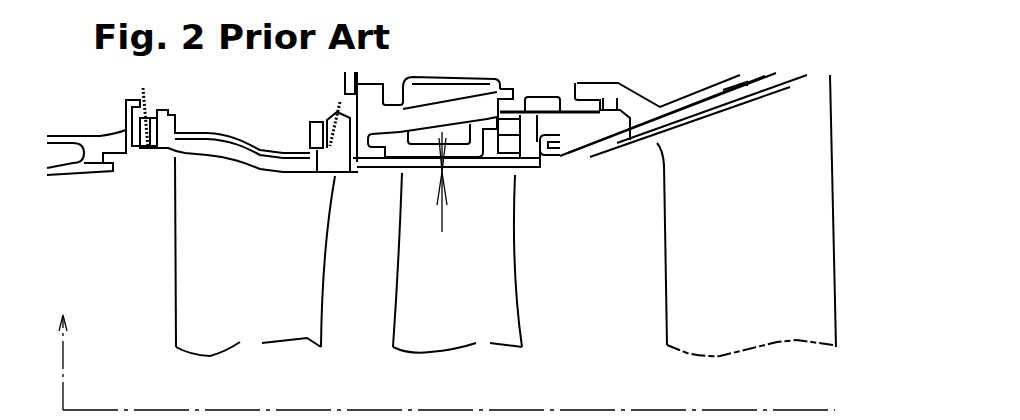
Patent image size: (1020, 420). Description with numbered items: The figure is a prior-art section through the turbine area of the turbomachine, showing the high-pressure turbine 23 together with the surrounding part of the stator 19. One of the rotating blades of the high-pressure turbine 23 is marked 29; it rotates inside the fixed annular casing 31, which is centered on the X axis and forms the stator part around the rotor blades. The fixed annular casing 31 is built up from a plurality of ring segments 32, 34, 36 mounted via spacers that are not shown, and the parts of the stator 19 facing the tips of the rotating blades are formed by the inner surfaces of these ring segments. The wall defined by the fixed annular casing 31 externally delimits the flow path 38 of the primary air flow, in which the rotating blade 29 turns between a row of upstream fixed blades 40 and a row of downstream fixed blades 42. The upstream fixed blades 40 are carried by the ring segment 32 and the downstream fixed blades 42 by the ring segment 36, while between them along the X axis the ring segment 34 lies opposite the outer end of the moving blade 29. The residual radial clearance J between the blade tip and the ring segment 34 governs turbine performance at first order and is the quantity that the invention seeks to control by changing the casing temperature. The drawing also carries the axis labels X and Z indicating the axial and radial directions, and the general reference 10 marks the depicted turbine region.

The turbine 10 is at (479, 236).
The stator 19 is at (246, 351).
The high-pressure turbine 23 is at (484, 368).
The rotating blade 29 is at (458, 279).
The fixed annular casing 31 is at (414, 187).
The ring segment 32 is at (243, 147).
The ring segment 34 is at (493, 168).
The ring segment 36 is at (780, 85).
The flow path 38 is at (479, 234).
The upstream fixed blades 40 is at (248, 259).
The downstream fixed blades 42 is at (755, 259).
The residual radial clearance J is at (447, 182).
The X axis X is at (800, 410).
The radial direction Z is at (52, 356).